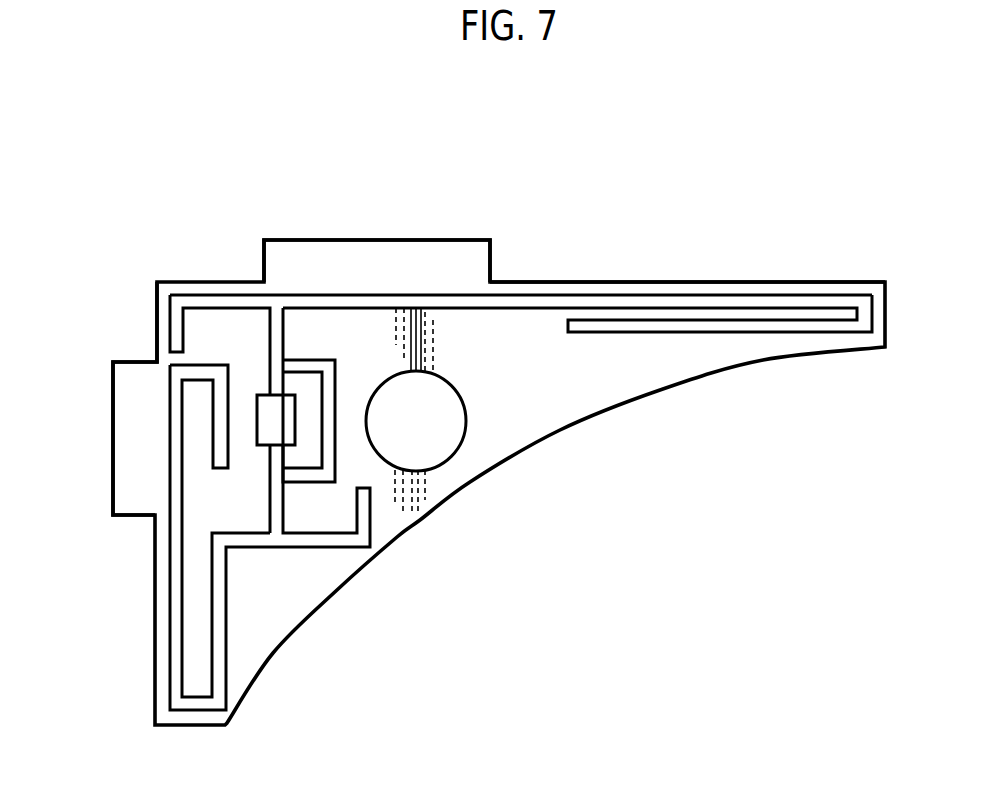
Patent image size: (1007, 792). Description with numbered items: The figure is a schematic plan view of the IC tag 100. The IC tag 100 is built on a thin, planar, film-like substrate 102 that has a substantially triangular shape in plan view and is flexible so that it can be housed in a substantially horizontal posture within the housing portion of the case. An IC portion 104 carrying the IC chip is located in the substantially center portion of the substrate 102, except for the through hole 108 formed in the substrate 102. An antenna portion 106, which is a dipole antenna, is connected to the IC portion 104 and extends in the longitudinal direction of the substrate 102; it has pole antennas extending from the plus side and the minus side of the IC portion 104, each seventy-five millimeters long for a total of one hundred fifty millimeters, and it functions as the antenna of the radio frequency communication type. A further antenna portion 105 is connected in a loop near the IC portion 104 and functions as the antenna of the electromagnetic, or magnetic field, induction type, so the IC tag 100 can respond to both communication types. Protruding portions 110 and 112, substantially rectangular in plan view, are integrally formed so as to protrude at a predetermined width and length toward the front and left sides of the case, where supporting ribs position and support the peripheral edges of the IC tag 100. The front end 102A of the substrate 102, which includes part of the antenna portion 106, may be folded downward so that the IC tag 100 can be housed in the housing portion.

The IC tag 100 is at (640, 187).
The substrate 102 is at (527, 402).
The front end of the substrate 102A is at (565, 289).
The IC portion 104 is at (287, 428).
The antenna portion 105 is at (330, 433).
The antenna portion 106 is at (172, 578).
The through hole 108 is at (423, 468).
The protruding portion 110 is at (368, 255).
The protruding portion 112 is at (128, 445).